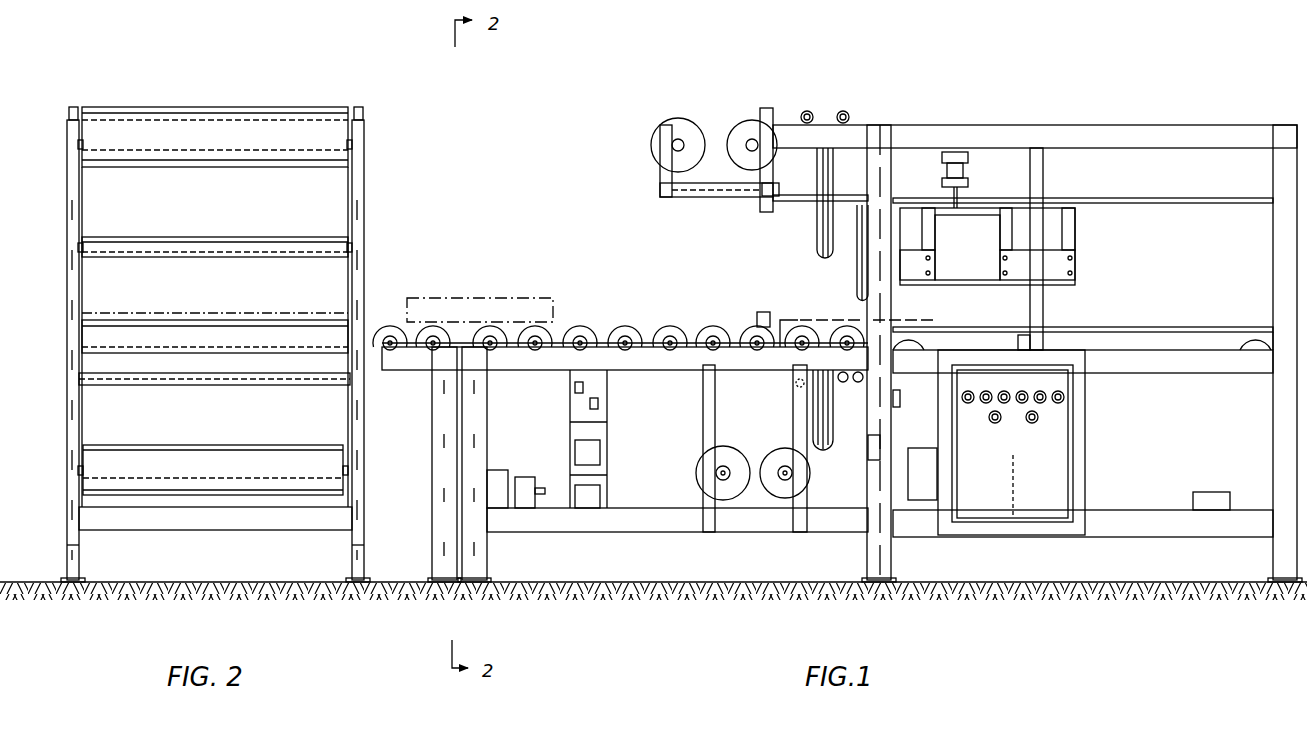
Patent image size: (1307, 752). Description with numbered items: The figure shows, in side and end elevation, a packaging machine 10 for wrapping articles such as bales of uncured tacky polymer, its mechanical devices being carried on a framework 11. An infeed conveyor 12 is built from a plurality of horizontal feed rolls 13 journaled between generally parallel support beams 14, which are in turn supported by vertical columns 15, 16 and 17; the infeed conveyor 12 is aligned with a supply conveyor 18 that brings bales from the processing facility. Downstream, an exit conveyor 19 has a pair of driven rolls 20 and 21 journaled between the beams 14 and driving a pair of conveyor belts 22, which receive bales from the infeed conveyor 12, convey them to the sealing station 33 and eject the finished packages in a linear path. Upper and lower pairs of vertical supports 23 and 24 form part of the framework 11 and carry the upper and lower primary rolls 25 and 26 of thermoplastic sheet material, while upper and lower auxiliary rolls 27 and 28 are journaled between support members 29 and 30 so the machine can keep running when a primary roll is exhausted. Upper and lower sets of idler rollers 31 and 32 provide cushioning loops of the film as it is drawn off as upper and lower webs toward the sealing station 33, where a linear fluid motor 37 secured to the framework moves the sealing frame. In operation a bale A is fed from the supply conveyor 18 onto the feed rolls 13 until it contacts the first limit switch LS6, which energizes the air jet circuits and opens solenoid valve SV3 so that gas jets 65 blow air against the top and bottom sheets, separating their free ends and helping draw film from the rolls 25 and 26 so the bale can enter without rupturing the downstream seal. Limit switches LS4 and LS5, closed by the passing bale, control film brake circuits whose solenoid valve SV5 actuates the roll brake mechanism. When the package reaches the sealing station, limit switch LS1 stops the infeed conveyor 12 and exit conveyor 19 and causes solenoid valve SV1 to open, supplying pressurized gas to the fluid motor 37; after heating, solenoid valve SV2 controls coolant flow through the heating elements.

In FIG. 2, the packaging machine 10 is at (384, 104).
In FIG. 1, the packaging machine 10 is at (656, 243).
In FIG. 2, the framework 11 is at (365, 293).
In FIG. 1, the framework 11 is at (1120, 123).
In FIG. 1, the infeed conveyor 12 is at (652, 330).
In FIG. 2, the feed rolls 13 is at (72, 352).
In FIG. 1, the feed rolls 13 is at (560, 323).
In FIG. 1, the support beams 14 is at (540, 372).
In FIG. 2, the vertical column 15 is at (352, 545).
In FIG. 1, the vertical column 15 is at (487, 562).
In FIG. 1, the vertical column 16 is at (880, 562).
In FIG. 1, the vertical column 17 is at (1283, 560).
In FIG. 1, the supply conveyor 18 is at (440, 405).
In FIG. 1, the exit conveyor 19 is at (1185, 326).
In FIG. 1, the driven roll 20 is at (912, 355).
In FIG. 1, the driven roll 21 is at (1262, 340).
In FIG. 1, the conveyor belts 22 is at (1083, 320).
In FIG. 2, the upper supports 23 is at (67, 150).
In FIG. 1, the upper supports 23 is at (770, 110).
In FIG. 1, the lower supports 24 is at (800, 533).
In FIG. 2, the upper primary roll 25 is at (137, 105).
In FIG. 1, the upper primary roll 25 is at (752, 128).
In FIG. 2, the lower primary roll 26 is at (178, 455).
In FIG. 1, the lower primary roll 26 is at (775, 497).
In FIG. 1, the upper auxiliary roll 27 is at (655, 150).
In FIG. 1, the lower auxiliary roll 28 is at (730, 500).
In FIG. 1, the upper support members 29 is at (660, 180).
In FIG. 1, the lower support members 30 is at (698, 460).
In FIG. 1, the upper idler rollers 31 is at (815, 112).
In FIG. 1, the lower idler rollers 32 is at (805, 400).
In FIG. 1, the sealing station 33 is at (1075, 232).
In FIG. 1, the linear fluid motor 37 is at (963, 166).
In FIG. 1, the gas jets 65 is at (780, 318).
In FIG. 1, the bale A is at (495, 298).
In FIG. 1, the limit switch LS1 is at (1022, 340).
In FIG. 1, the limit switch LS4 is at (862, 235).
In FIG. 1, the limit switch LS5 is at (868, 448).
In FIG. 1, the limit switch LS6 is at (757, 312).
In FIG. 1, the solenoid valve SV1 is at (1210, 492).
In FIG. 1, the solenoid valve SV2 is at (598, 404).
In FIG. 1, the solenoid valve SV3 is at (583, 387).
In FIG. 1, the solenoid valve SV5 is at (900, 407).